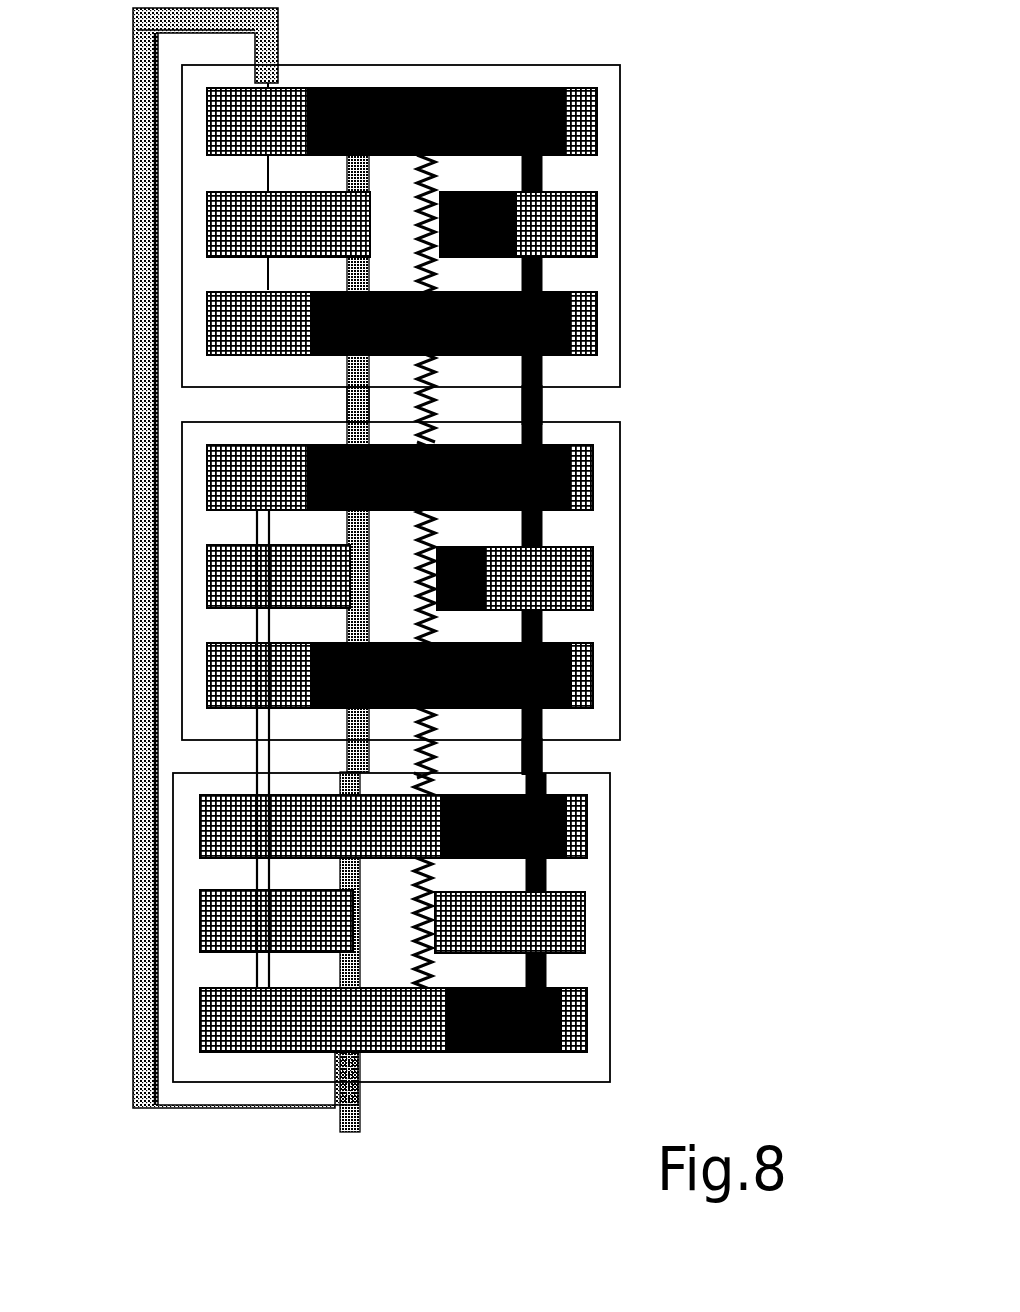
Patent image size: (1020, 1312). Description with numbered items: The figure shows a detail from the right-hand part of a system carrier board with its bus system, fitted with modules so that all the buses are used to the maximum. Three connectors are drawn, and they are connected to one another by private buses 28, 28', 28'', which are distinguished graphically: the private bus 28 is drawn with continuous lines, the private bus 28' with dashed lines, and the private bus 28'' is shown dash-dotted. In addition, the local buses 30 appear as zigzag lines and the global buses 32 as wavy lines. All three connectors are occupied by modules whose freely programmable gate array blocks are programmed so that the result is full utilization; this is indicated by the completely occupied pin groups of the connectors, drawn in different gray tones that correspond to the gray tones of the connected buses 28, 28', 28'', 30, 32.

The private bus 28 is at (195, 558).
The private bus 28' is at (350, 402).
The private bus 28'' is at (151, 749).
The local bus 30 is at (553, 403).
The global bus 32 is at (553, 760).